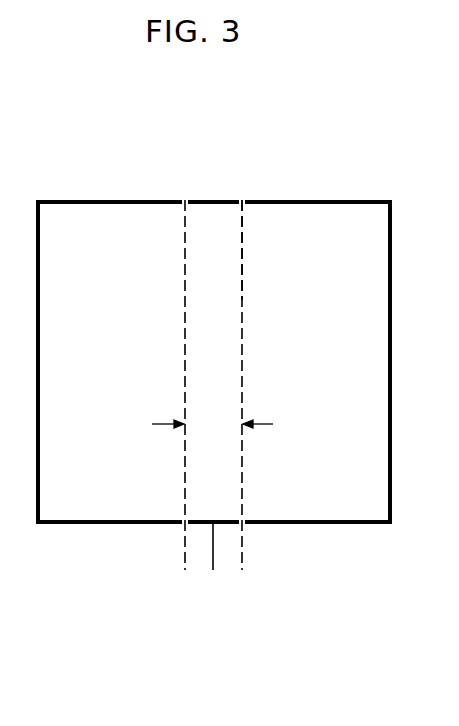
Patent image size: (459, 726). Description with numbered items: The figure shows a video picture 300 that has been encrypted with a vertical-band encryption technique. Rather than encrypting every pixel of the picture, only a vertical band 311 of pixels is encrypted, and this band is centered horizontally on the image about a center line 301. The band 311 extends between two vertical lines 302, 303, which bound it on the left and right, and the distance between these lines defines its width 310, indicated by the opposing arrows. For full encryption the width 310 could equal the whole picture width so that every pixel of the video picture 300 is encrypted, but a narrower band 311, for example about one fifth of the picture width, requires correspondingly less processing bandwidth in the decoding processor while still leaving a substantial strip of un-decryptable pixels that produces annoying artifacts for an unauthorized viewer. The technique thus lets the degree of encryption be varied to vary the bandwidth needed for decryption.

The video picture 300 is at (202, 115).
The center line 301 is at (213, 583).
The vertical line 302 is at (179, 562).
The vertical line 303 is at (246, 546).
The width 310 is at (245, 420).
The vertical band 311 is at (246, 286).